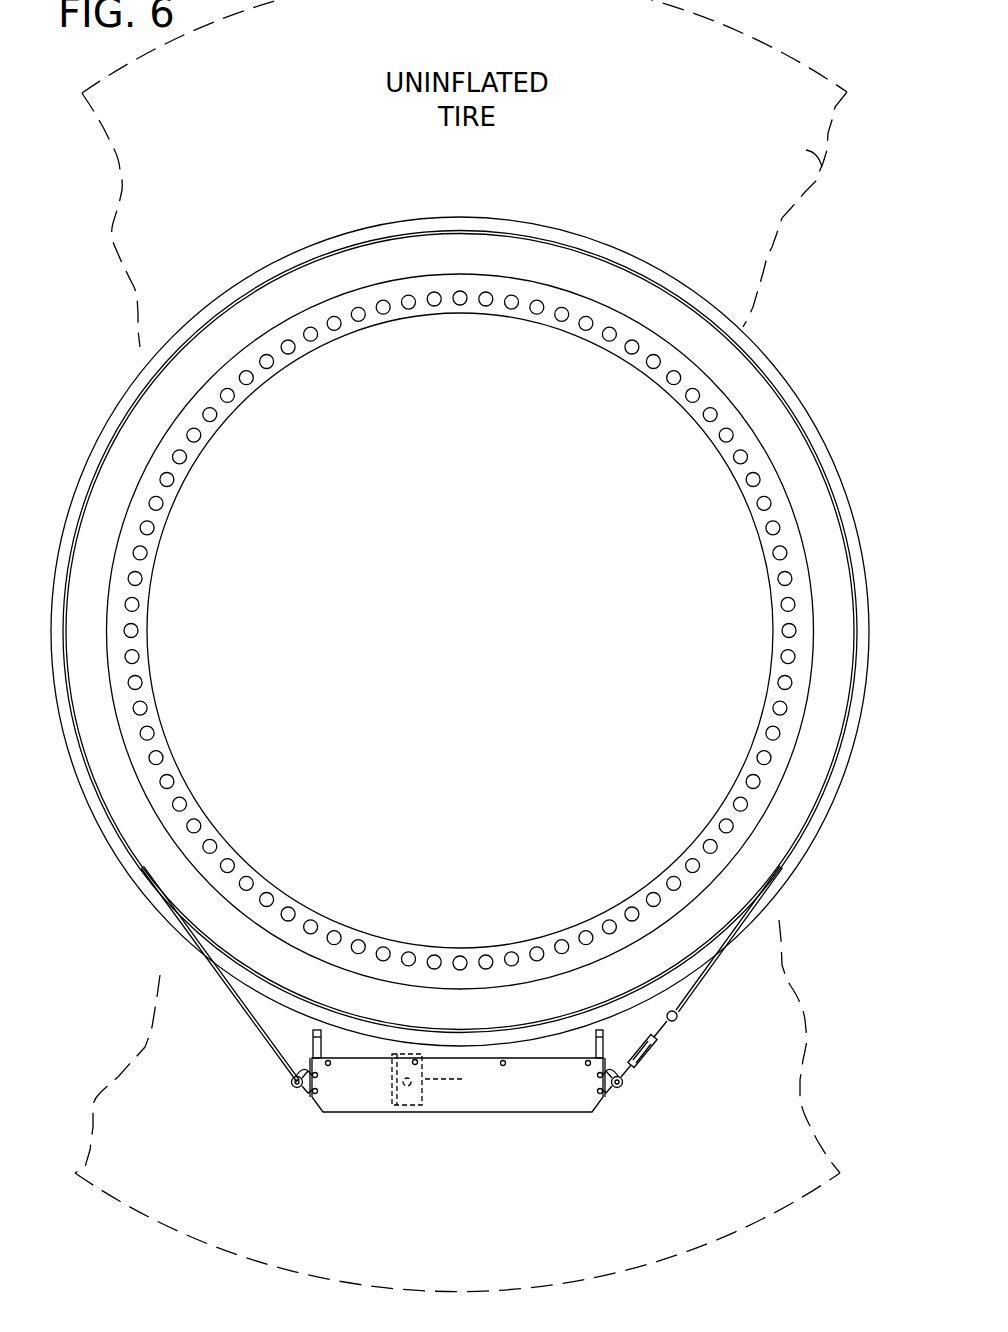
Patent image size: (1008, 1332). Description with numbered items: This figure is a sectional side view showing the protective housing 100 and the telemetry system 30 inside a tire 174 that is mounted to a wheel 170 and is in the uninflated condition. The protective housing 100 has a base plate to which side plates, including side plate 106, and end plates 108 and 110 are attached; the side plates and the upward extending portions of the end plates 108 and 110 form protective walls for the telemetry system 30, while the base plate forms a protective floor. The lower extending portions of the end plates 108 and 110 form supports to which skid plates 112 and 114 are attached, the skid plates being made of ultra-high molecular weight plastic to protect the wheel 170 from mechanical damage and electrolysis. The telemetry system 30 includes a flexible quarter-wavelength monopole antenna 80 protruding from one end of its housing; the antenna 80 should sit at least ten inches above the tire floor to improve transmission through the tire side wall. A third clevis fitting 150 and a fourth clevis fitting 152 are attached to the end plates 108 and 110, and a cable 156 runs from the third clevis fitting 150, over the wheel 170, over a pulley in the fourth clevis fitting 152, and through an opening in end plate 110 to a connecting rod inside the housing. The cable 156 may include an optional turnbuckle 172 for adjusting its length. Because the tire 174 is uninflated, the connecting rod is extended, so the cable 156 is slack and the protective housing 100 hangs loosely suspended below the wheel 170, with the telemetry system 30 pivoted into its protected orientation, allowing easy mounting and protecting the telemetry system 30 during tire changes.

The tire 174 is at (826, 166).
The wheel 170 is at (777, 405).
The cable 156 is at (252, 1033).
The protective housing 100 is at (444, 1069).
The side plate 106 is at (560, 1097).
The end plate 110 is at (313, 1047).
The end plate 108 is at (605, 1048).
The skid plate 114 is at (318, 1030).
The skid plate 112 is at (597, 1028).
The telemetry system 30 is at (413, 1109).
The antenna 80 is at (447, 1079).
The third clevis fitting 150 is at (307, 1097).
The fourth clevis fitting 152 is at (607, 1096).
The turnbuckle 172 is at (655, 1057).